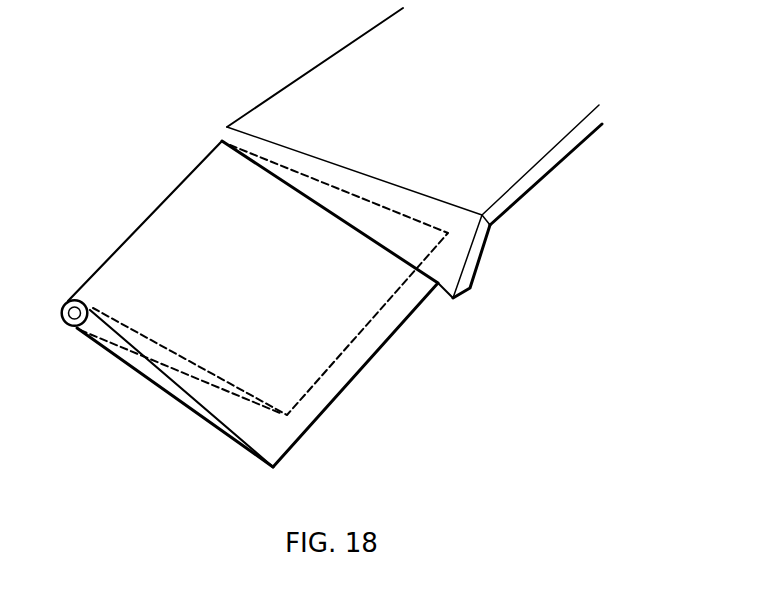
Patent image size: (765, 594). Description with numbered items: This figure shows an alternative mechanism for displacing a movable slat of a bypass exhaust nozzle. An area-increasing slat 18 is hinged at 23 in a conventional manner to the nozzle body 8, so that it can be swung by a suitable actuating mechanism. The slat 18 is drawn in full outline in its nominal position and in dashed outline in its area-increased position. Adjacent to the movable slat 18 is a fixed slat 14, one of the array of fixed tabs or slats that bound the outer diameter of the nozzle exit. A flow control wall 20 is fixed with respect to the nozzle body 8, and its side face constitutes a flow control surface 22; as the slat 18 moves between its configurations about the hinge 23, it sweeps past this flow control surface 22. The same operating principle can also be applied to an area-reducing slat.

The nozzle body 8 is at (134, 156).
The fixed slat 14 is at (545, 162).
The area-increasing slat 18 is at (287, 455).
The flow control wall 20 is at (475, 252).
The flow control surface 22 is at (445, 220).
The hinge 23 is at (66, 316).